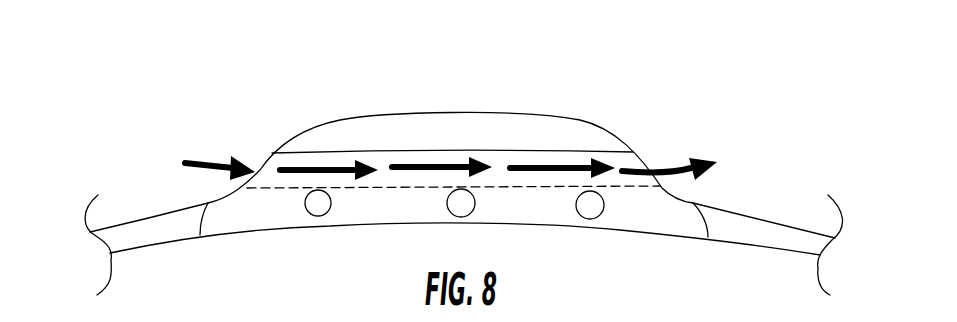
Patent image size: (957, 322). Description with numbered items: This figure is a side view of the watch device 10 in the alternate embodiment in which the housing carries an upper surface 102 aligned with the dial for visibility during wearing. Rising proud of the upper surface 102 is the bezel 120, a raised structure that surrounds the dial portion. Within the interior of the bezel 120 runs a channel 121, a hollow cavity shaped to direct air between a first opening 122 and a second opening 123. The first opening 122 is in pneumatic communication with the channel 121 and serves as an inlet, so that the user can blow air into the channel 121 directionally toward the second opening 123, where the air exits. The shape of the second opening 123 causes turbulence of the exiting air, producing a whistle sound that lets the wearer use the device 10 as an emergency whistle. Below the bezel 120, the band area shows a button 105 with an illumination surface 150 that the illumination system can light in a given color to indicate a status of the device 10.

The device 10 is at (118, 132).
The upper surface 102 is at (318, 130).
The button 105 is at (310, 226).
The bezel 120 is at (578, 152).
The channel 121 is at (385, 158).
The first opening 122 is at (205, 160).
The second opening 123 is at (645, 163).
The illumination surface 150 is at (326, 207).